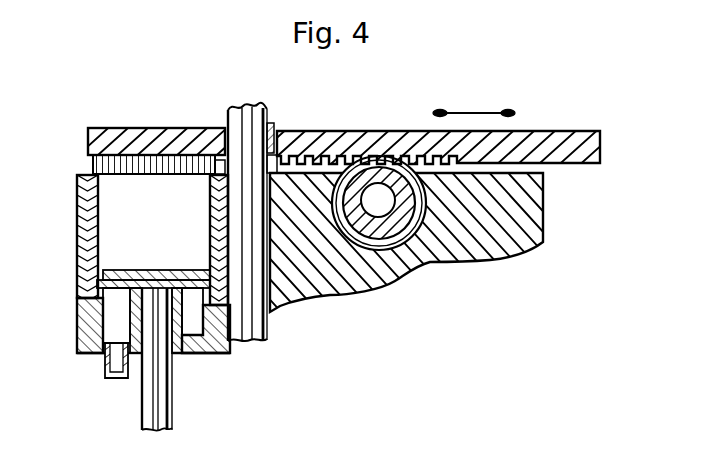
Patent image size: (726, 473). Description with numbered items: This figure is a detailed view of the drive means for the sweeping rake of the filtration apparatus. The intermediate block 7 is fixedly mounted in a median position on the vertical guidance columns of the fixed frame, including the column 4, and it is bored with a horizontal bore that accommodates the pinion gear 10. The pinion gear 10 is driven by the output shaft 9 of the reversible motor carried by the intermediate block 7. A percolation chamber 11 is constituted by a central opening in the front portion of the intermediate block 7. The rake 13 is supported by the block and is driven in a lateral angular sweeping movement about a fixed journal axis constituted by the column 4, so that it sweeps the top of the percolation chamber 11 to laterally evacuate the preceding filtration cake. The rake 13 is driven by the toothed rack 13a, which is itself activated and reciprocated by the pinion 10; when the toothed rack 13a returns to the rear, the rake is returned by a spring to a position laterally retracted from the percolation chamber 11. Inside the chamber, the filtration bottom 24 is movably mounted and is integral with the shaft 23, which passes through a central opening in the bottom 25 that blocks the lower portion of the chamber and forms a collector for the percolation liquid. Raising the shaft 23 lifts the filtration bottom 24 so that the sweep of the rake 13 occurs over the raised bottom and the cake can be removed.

The guidance column 4 is at (266, 112).
The intermediate block 7 is at (520, 235).
The output shaft 9 is at (383, 203).
The pinion gear 10 is at (380, 178).
The percolation chamber 11 is at (123, 198).
The rake 13 is at (167, 128).
The toothed rack 13a is at (583, 95).
The shaft 23 is at (152, 400).
The filtration bottom 24 is at (117, 274).
The bottom 25 is at (200, 348).